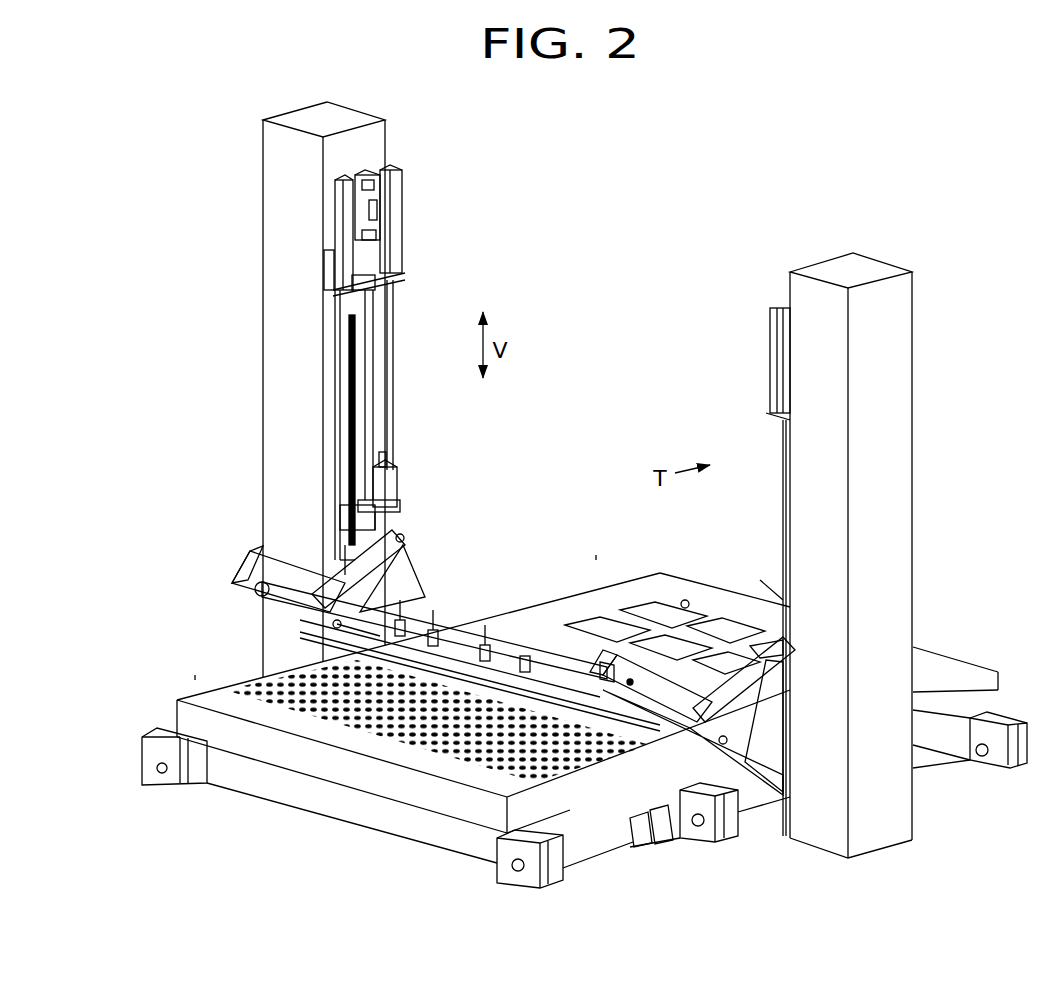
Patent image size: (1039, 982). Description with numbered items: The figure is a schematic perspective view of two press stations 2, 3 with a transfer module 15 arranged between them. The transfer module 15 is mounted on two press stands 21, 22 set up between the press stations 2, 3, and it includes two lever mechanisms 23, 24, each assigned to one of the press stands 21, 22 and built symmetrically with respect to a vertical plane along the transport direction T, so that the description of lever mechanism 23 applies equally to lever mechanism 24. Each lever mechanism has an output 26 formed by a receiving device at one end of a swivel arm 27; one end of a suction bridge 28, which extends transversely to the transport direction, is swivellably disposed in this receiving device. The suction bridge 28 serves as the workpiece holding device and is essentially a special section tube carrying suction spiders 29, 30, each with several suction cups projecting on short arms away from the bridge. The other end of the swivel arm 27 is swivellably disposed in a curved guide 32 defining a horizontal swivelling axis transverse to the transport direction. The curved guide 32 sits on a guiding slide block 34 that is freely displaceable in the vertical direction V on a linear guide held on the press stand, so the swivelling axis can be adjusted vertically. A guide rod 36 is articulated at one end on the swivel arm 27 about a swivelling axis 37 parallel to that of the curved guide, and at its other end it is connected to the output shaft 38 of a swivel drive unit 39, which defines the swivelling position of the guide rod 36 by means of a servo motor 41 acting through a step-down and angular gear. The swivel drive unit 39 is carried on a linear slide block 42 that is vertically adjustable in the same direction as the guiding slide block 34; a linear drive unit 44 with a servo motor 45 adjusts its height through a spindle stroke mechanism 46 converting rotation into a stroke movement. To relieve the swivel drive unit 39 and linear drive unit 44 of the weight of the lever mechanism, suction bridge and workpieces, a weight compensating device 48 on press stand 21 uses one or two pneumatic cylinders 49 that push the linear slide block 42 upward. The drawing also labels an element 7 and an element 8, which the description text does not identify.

The press station 2 is at (195, 662).
The press station 3 is at (596, 532).
The printing table 7 is at (307, 763).
The workpiece support plate 8 is at (674, 626).
The transfer module 15 is at (449, 693).
The press stand 21 is at (318, 120).
The press stand 22 is at (897, 325).
The lever mechanism 23 is at (302, 468).
The lever mechanism 24 is at (754, 568).
The output 26 is at (262, 563).
The swivel arm 27 is at (272, 598).
The suction bridge 28 is at (452, 628).
The suction spider 29 is at (403, 632).
The suction spider 30 is at (434, 644).
The curved guide 32 is at (420, 622).
The guiding slide block 34 is at (402, 562).
The guide rod 36 is at (352, 555).
The swivelling axis 37 is at (387, 637).
The output shaft 38 is at (402, 560).
The swivel drive unit 39 is at (376, 496).
The servo motor 41 is at (393, 476).
The linear slide block 42 is at (345, 510).
The linear drive unit 44 is at (406, 283).
The servo motor 45 is at (393, 185).
The spindle stroke mechanism 46 is at (370, 400).
The weight compensating device 48 is at (332, 192).
The pneumatic cylinder 49 is at (345, 235).